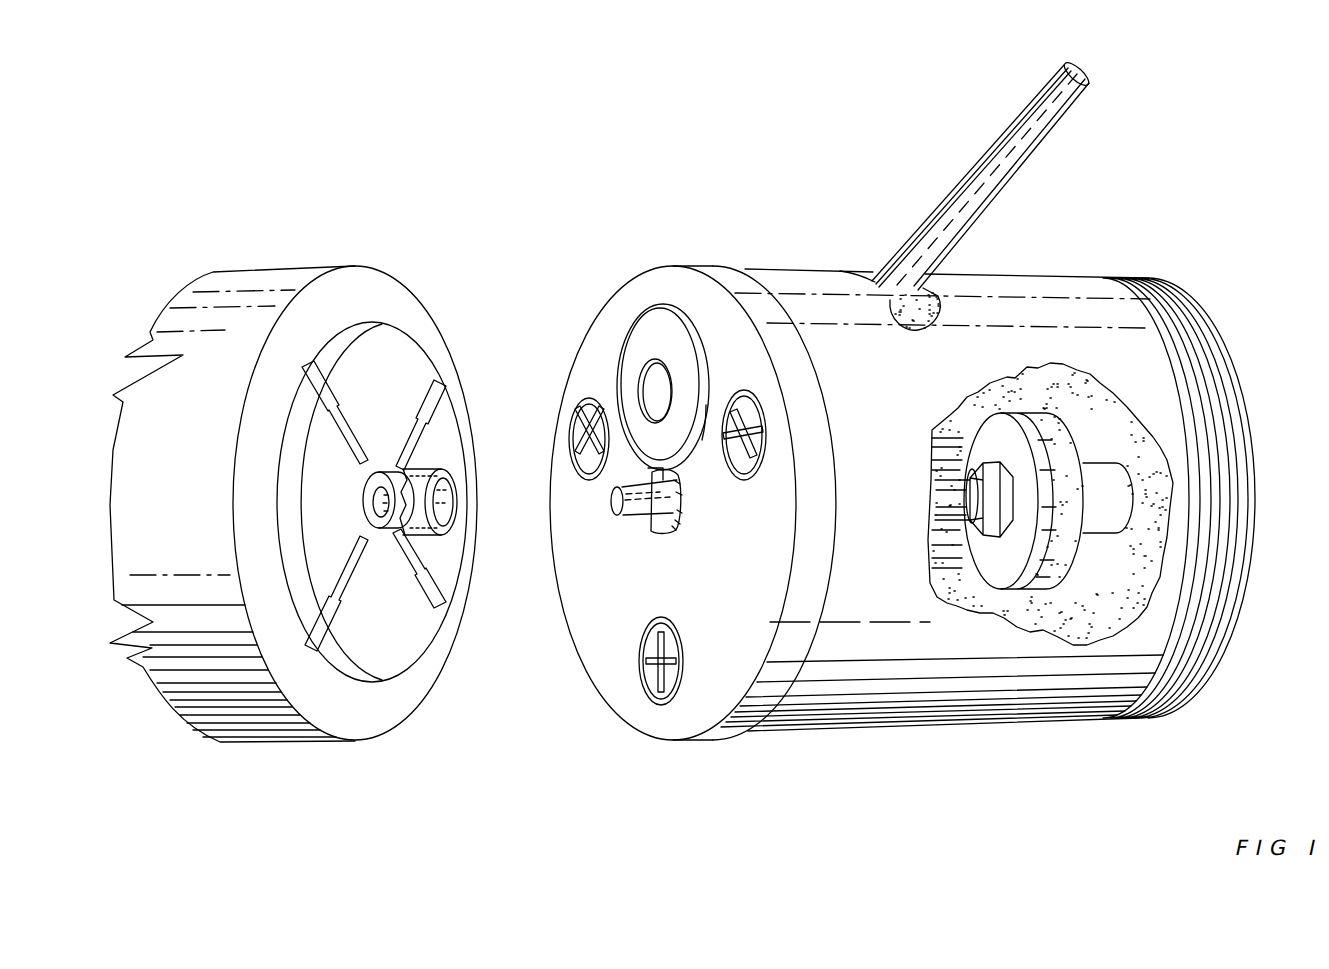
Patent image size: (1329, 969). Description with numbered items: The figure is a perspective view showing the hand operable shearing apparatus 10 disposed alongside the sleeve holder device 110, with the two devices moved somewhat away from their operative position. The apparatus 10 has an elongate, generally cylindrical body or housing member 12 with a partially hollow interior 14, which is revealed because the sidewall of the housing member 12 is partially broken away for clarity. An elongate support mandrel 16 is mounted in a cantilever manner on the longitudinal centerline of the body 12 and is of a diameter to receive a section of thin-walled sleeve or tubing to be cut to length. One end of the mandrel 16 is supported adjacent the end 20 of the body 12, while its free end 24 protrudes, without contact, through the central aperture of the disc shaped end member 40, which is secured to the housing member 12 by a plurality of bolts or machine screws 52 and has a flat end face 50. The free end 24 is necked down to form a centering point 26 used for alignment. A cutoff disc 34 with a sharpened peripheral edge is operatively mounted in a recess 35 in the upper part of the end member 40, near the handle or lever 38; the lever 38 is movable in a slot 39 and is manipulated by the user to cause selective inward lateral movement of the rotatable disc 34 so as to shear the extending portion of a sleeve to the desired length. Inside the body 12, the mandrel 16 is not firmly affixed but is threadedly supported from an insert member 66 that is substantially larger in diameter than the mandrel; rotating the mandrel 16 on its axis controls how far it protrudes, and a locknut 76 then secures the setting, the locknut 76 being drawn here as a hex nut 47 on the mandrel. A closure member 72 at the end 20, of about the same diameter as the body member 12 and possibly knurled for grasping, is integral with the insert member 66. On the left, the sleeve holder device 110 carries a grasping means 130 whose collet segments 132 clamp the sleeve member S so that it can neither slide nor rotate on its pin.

The hand operable apparatus 10 is at (902, 422).
The cylindrical body or housing member 12 is at (865, 705).
The partially hollow interior 14 is at (1035, 391).
The support mandrel 16 is at (953, 523).
The end of the cylindrical body 20 is at (1146, 312).
The free end of the mandrel 24 is at (655, 526).
The centering point 26 is at (614, 503).
The cutoff disc 34 is at (652, 333).
The recess 35 is at (705, 407).
The handle or lever 38 is at (1013, 137).
The slot 39 is at (918, 286).
The disc shaped end member 40 is at (757, 710).
The hex nut 47 is at (941, 463).
The flat end face 50 is at (596, 616).
The bolts or machine screws 52 is at (585, 430).
The insert member 66 is at (1101, 506).
The closure member 72 is at (1209, 648).
The locknut 76 is at (963, 462).
The sleeve holder device 110 is at (306, 250).
The grasping means 130 is at (397, 323).
The collet segments 132 is at (300, 351).
The sleeve member S is at (440, 468).